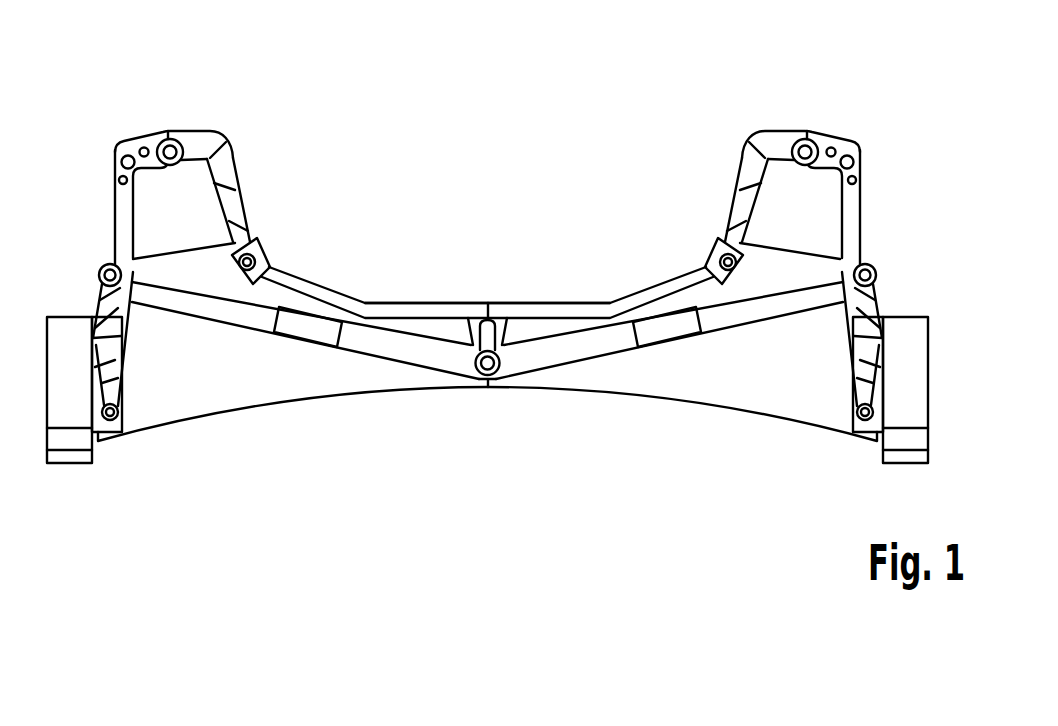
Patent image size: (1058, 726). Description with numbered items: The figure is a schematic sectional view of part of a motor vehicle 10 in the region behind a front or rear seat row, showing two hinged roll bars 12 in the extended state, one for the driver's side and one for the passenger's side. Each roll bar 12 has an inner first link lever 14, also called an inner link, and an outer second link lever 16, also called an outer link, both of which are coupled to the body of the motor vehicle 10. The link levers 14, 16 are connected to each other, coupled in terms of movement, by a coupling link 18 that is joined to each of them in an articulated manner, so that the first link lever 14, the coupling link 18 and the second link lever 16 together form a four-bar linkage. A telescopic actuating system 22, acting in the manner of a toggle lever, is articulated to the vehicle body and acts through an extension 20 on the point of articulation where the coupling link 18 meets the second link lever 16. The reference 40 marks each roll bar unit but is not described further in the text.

The motor vehicle 10 is at (640, 85).
The roll bar 12 is at (221, 350).
The inner first link lever 14 is at (245, 205).
The outer second link lever 16 is at (112, 322).
The coupling link 18 is at (120, 207).
The extension 20 is at (133, 287).
The telescopic actuating system 22 is at (400, 355).
The wheel suspension unit 40 is at (138, 108).